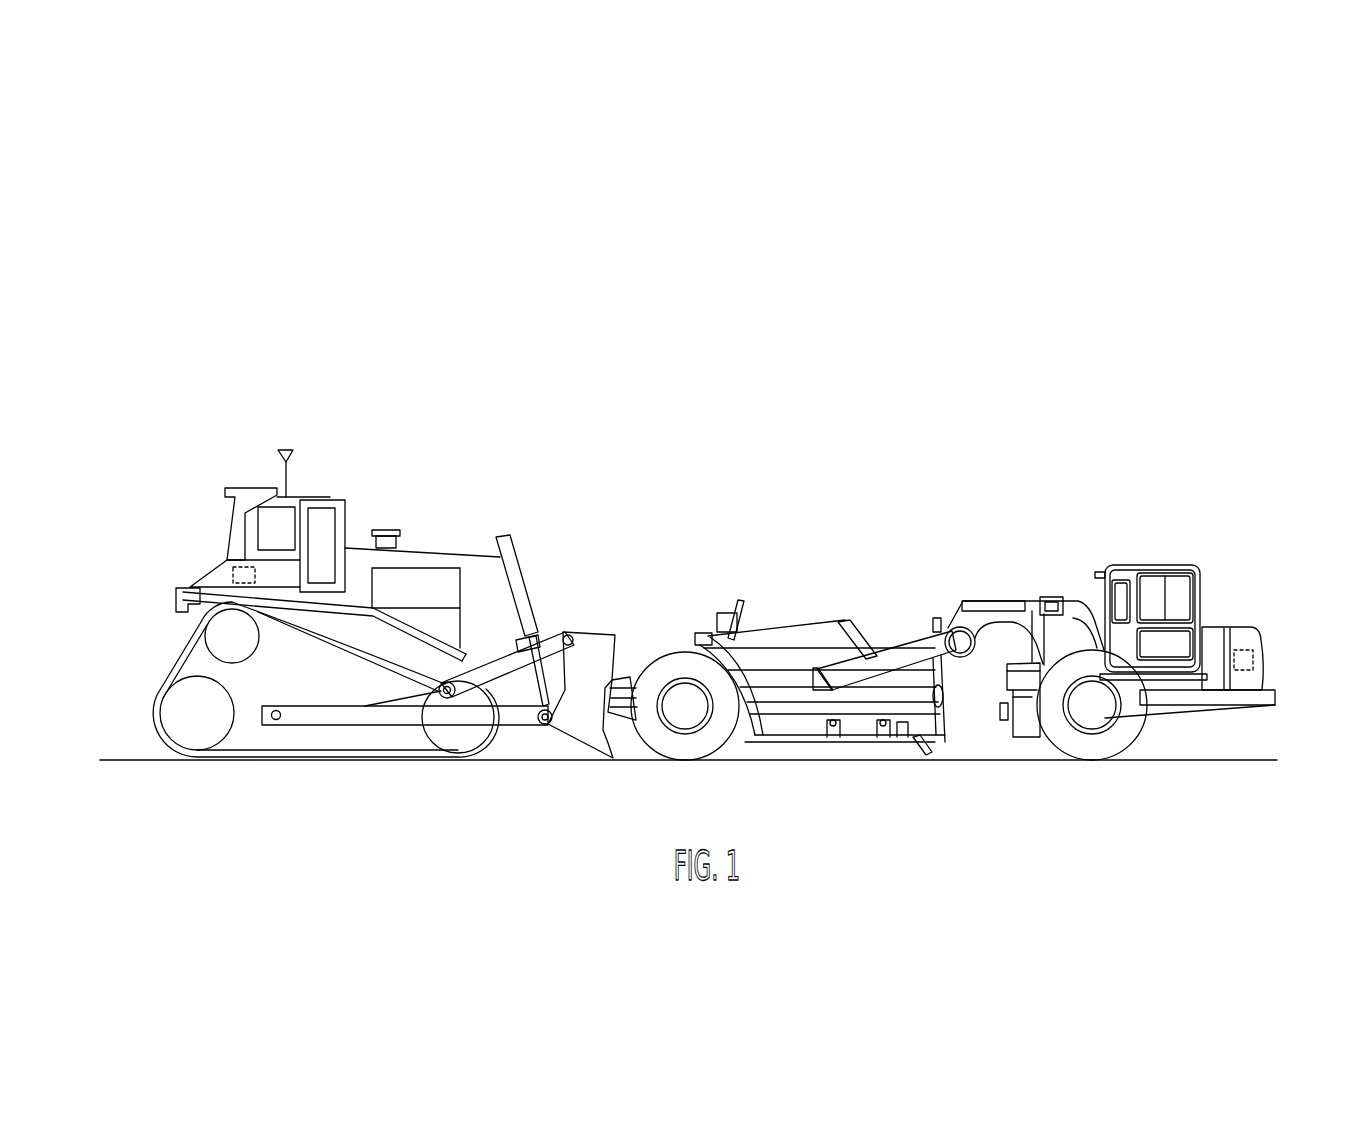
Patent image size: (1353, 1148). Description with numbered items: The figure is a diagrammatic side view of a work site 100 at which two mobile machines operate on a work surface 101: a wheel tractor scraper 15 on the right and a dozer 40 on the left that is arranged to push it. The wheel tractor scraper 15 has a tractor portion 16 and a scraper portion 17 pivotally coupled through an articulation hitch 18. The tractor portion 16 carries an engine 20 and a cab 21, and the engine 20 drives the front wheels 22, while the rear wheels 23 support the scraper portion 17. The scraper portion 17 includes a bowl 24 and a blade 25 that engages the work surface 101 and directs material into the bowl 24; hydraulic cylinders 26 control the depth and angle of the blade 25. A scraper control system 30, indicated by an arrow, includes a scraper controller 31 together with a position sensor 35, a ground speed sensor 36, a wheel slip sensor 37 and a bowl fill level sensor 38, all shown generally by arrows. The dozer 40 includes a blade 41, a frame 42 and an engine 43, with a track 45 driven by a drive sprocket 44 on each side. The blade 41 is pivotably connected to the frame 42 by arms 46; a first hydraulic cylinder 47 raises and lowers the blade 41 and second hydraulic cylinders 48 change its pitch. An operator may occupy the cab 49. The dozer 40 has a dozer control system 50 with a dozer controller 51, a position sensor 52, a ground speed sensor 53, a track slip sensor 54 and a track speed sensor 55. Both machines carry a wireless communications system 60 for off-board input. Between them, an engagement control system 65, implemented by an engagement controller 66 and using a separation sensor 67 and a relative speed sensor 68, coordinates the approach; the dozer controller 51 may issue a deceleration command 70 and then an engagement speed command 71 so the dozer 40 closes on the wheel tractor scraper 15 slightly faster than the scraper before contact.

The work site 100 is at (512, 166).
The work surface 101 is at (1216, 752).
The wheel tractor scraper 15 is at (1095, 300).
The tractor portion 16 is at (1260, 643).
The scraper portion 17 is at (710, 638).
The articulation hitch 18 is at (977, 622).
The engine 20 is at (1213, 647).
The cab 21 is at (1153, 565).
The front wheels 22 is at (1107, 740).
The rear wheels 23 is at (712, 737).
The bowl 24 is at (793, 622).
The blade 25 is at (917, 752).
The hydraulic cylinders 26 is at (890, 590).
The scraper control system 30 is at (1215, 540).
The scraper controller 31 is at (1255, 667).
The position sensor 35 is at (930, 487).
The ground speed sensor 36 is at (950, 487).
The wheel slip sensor 37 is at (970, 487).
The bowl fill level sensor 38 is at (995, 487).
The dozer 40 is at (414, 298).
The blade 41 is at (585, 657).
The frame 42 is at (195, 617).
The engine 43 is at (470, 560).
The drive sprocket 44 is at (223, 637).
The track 45 is at (159, 752).
The arms 46 is at (398, 707).
The first hydraulic cylinder 47 is at (513, 570).
The second hydraulic cylinders 48 is at (482, 742).
The cab 49 is at (300, 500).
The dozer control system 50 is at (198, 498).
The dozer controller 51 is at (238, 572).
The position sensor 52 is at (400, 405).
The ground speed sensor 53 is at (428, 408).
The track slip sensor 54 is at (465, 410).
The track speed sensor 55 is at (495, 415).
The wireless communications system 60 is at (292, 428).
The engagement control system 65 is at (652, 285).
The engagement controller 66 is at (695, 280).
The separation sensor 67 is at (741, 280).
The relative speed sensor 68 is at (785, 280).
The deceleration command 70 is at (886, 265).
The engagement speed command 71 is at (938, 272).